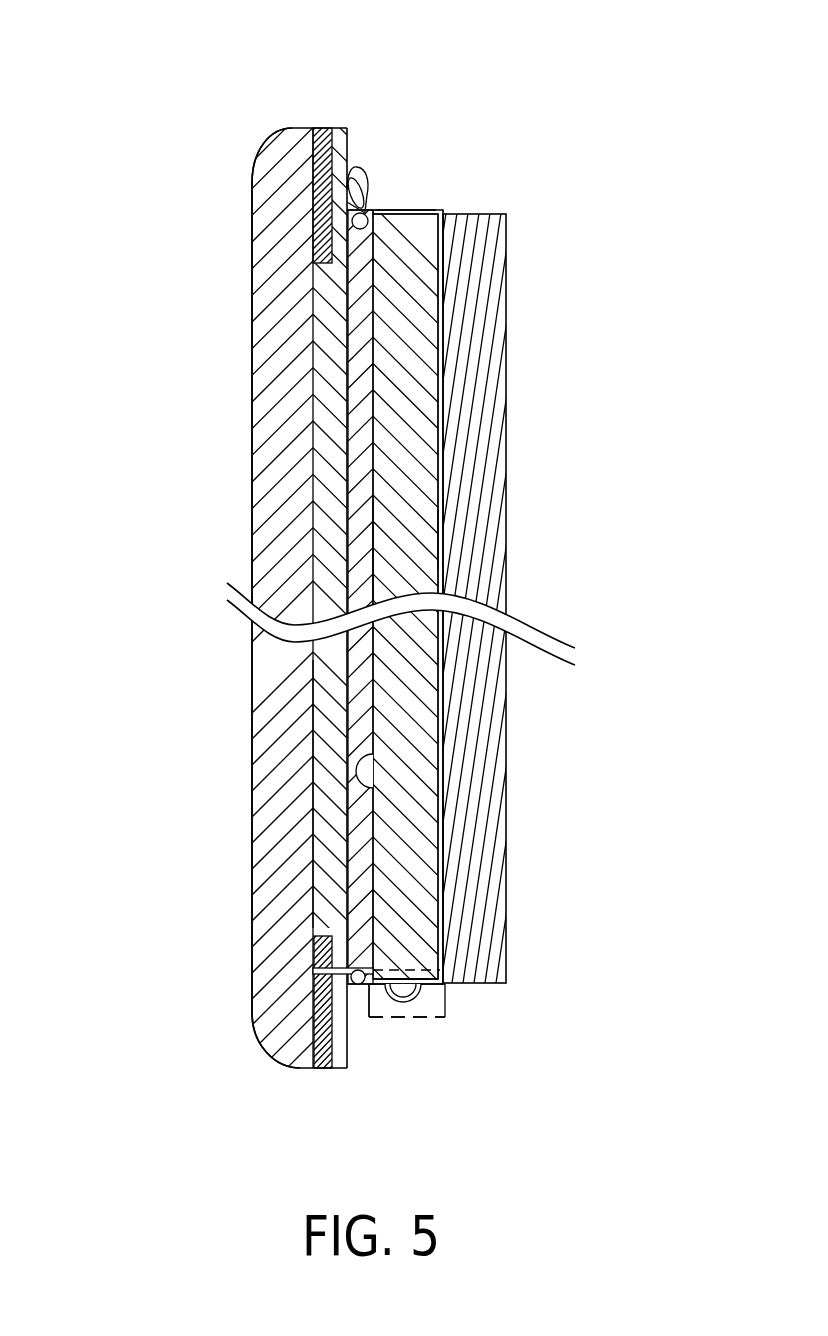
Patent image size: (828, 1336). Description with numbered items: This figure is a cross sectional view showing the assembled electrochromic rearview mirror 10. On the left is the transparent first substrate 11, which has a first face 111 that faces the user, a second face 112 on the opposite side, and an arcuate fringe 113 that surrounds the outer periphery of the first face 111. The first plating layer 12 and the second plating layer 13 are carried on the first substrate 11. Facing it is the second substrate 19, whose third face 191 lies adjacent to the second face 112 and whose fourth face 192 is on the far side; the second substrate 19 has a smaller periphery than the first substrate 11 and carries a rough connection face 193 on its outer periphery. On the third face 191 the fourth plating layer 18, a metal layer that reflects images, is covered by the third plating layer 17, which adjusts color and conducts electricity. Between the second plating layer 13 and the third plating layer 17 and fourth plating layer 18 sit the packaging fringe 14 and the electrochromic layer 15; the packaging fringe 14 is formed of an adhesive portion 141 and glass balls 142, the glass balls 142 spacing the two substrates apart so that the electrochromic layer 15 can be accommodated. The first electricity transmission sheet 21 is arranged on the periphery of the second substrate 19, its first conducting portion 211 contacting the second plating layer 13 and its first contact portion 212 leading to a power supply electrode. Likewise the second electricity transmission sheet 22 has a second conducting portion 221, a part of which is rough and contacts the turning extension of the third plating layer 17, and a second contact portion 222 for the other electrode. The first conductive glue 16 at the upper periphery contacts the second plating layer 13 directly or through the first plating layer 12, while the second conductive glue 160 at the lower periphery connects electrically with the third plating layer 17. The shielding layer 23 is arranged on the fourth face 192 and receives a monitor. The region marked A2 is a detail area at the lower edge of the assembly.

The electrochromic rearview mirror 10 is at (250, 116).
The first substrate 11 is at (265, 298).
The first face 111 is at (250, 803).
The second face 112 is at (326, 708).
The arcuate fringe 113 is at (262, 155).
The first plating layer 12 is at (323, 203).
The second plating layer 13 is at (325, 430).
The packaging fringe 14 is at (363, 990).
The adhesive portion 141 is at (334, 971).
The glass balls 142 is at (357, 963).
The electrochromic layer 15 is at (362, 478).
The first conductive glue 16 is at (369, 179).
The second conductive glue 160 is at (400, 1007).
The third plating layer 17 is at (370, 550).
The fourth plating layer 18 is at (441, 536).
The second substrate 19 is at (410, 401).
The third face 191 is at (373, 753).
The fourth face 192 is at (440, 823).
The rough connection face 193 is at (406, 984).
The first electricity transmission sheet 21 is at (437, 209).
The first conducting portion 211 is at (393, 209).
The first contact portion 212 is at (439, 278).
The second electricity transmission sheet 22 is at (440, 968).
The second conducting portion 221 is at (382, 992).
The second contact portion 222 is at (440, 892).
The shielding layer 23 is at (478, 338).
The region A2 is at (447, 1003).